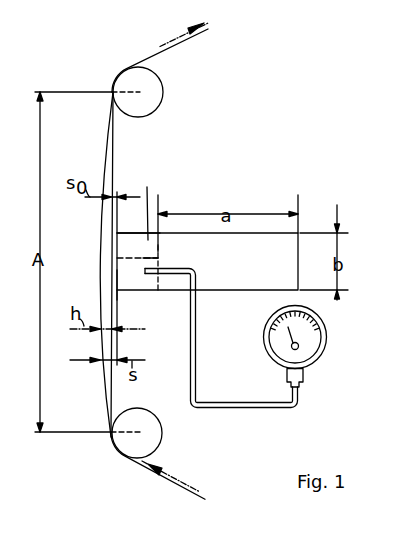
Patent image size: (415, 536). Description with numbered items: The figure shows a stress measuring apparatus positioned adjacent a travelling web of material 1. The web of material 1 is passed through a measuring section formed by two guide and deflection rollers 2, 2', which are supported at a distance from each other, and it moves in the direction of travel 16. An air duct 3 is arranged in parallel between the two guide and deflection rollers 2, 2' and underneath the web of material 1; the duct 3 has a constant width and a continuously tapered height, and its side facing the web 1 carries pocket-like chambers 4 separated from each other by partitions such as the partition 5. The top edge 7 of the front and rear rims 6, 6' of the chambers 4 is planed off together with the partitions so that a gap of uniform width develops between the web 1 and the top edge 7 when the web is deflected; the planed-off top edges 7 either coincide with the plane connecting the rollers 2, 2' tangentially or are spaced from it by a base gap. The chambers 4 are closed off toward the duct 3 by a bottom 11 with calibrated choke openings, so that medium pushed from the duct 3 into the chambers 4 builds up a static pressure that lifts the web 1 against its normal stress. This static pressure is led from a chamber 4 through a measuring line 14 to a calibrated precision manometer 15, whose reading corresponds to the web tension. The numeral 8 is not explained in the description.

The web of material 1 is at (101, 258).
The guide and deflection roller 2 is at (115, 438).
The guide and deflection roller 2' is at (126, 74).
The air duct 3 is at (233, 284).
The pocket-like chamber 4 is at (145, 202).
The partition 5 is at (143, 258).
The front rim 6 is at (145, 256).
The rear rim 6' is at (138, 221).
The top edge 7 is at (117, 277).
The web 8 is at (110, 221).
The bottom 11 is at (160, 249).
The measuring line 14 is at (298, 405).
The precision manometer 15 is at (322, 352).
The direction of travel 16 is at (170, 40).